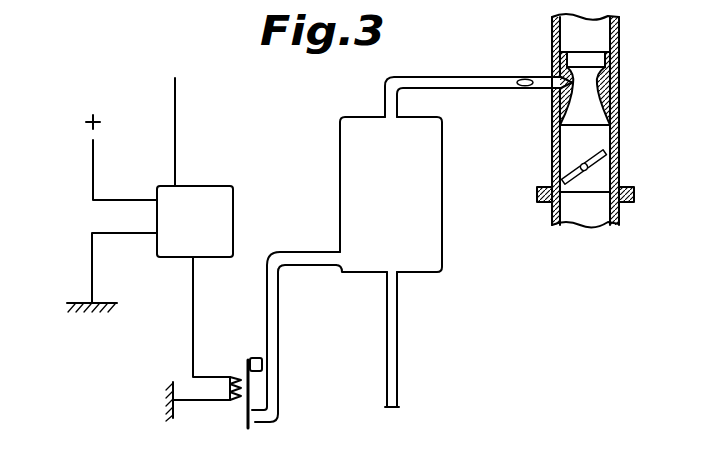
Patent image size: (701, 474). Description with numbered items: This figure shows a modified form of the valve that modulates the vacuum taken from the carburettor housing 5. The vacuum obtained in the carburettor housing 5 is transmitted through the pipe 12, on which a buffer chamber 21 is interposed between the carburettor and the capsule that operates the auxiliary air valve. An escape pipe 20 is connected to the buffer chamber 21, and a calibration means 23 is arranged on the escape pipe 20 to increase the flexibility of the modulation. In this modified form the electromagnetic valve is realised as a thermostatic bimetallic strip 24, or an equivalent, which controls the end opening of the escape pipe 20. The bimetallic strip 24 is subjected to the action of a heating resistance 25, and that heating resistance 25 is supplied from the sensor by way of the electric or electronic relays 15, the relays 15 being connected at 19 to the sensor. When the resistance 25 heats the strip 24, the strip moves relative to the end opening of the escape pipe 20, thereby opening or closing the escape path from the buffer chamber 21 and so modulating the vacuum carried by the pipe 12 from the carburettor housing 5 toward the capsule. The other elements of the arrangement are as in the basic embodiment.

The carburettor housing 5 is at (598, 105).
The pipe 12 is at (467, 71).
The electric or electronic relays 15 is at (210, 197).
The connection to the sensor 19 is at (177, 111).
The escape pipe 20 is at (290, 252).
The buffer chamber 21 is at (443, 257).
The calibration means 23 is at (256, 415).
The thermostatic bimetallic strip 24 is at (242, 375).
The heating resistance 25 is at (232, 394).